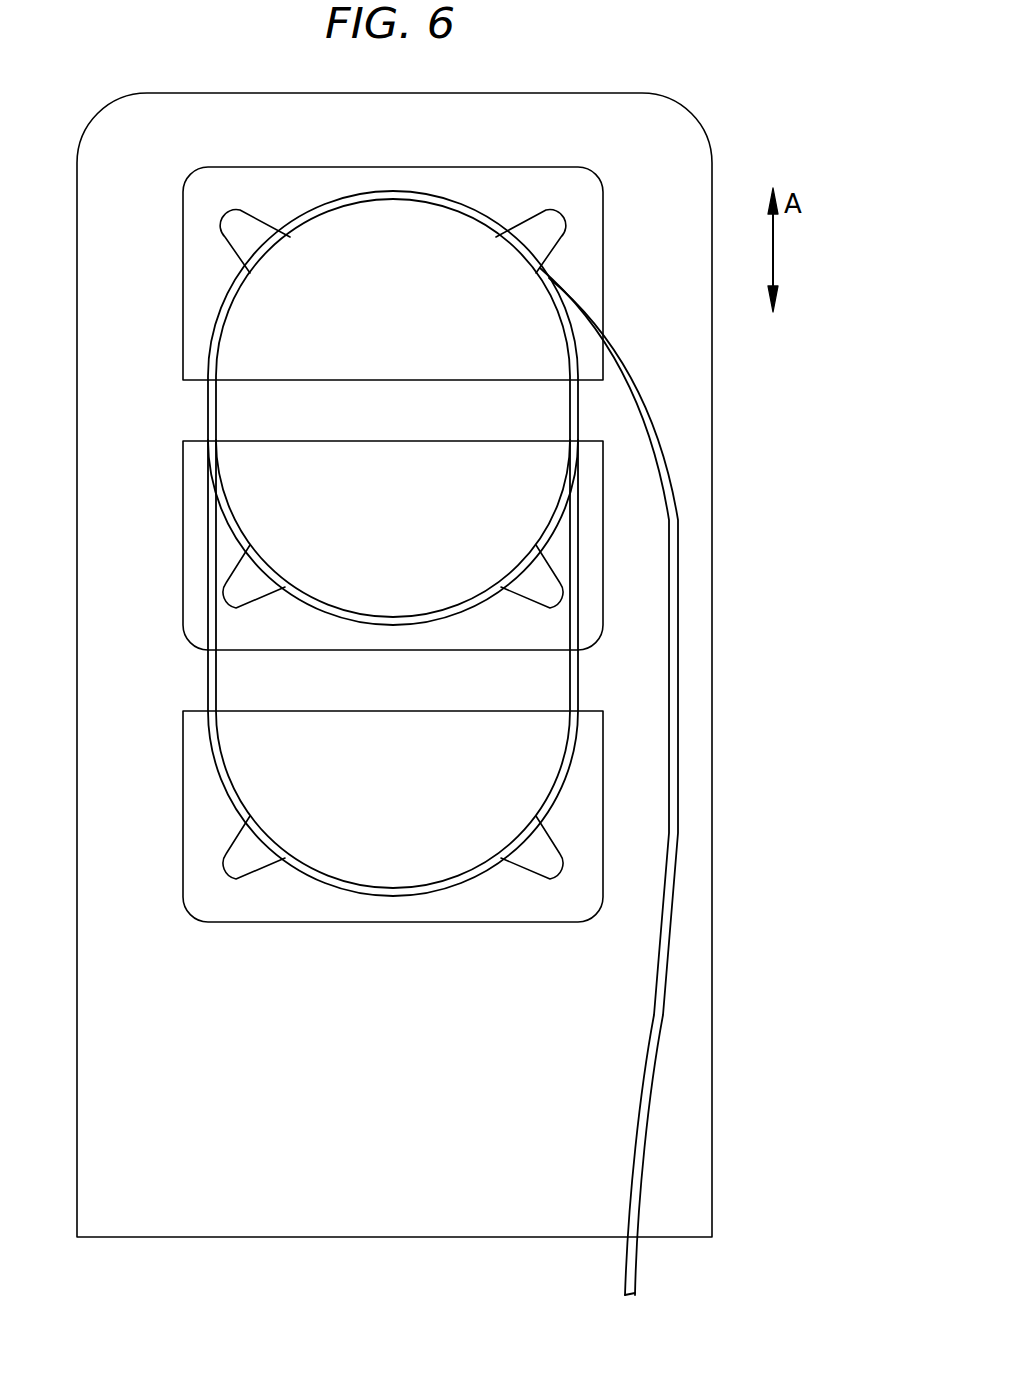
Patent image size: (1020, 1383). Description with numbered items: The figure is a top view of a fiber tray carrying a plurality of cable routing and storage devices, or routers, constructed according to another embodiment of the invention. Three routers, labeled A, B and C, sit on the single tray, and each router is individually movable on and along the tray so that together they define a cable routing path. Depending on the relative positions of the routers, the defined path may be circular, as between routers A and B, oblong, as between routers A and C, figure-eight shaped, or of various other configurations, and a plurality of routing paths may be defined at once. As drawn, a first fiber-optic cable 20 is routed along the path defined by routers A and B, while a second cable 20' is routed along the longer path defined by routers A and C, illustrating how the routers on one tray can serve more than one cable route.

The first fiber-optic cable 20 is at (659, 781).
The second cable 20' is at (344, 543).